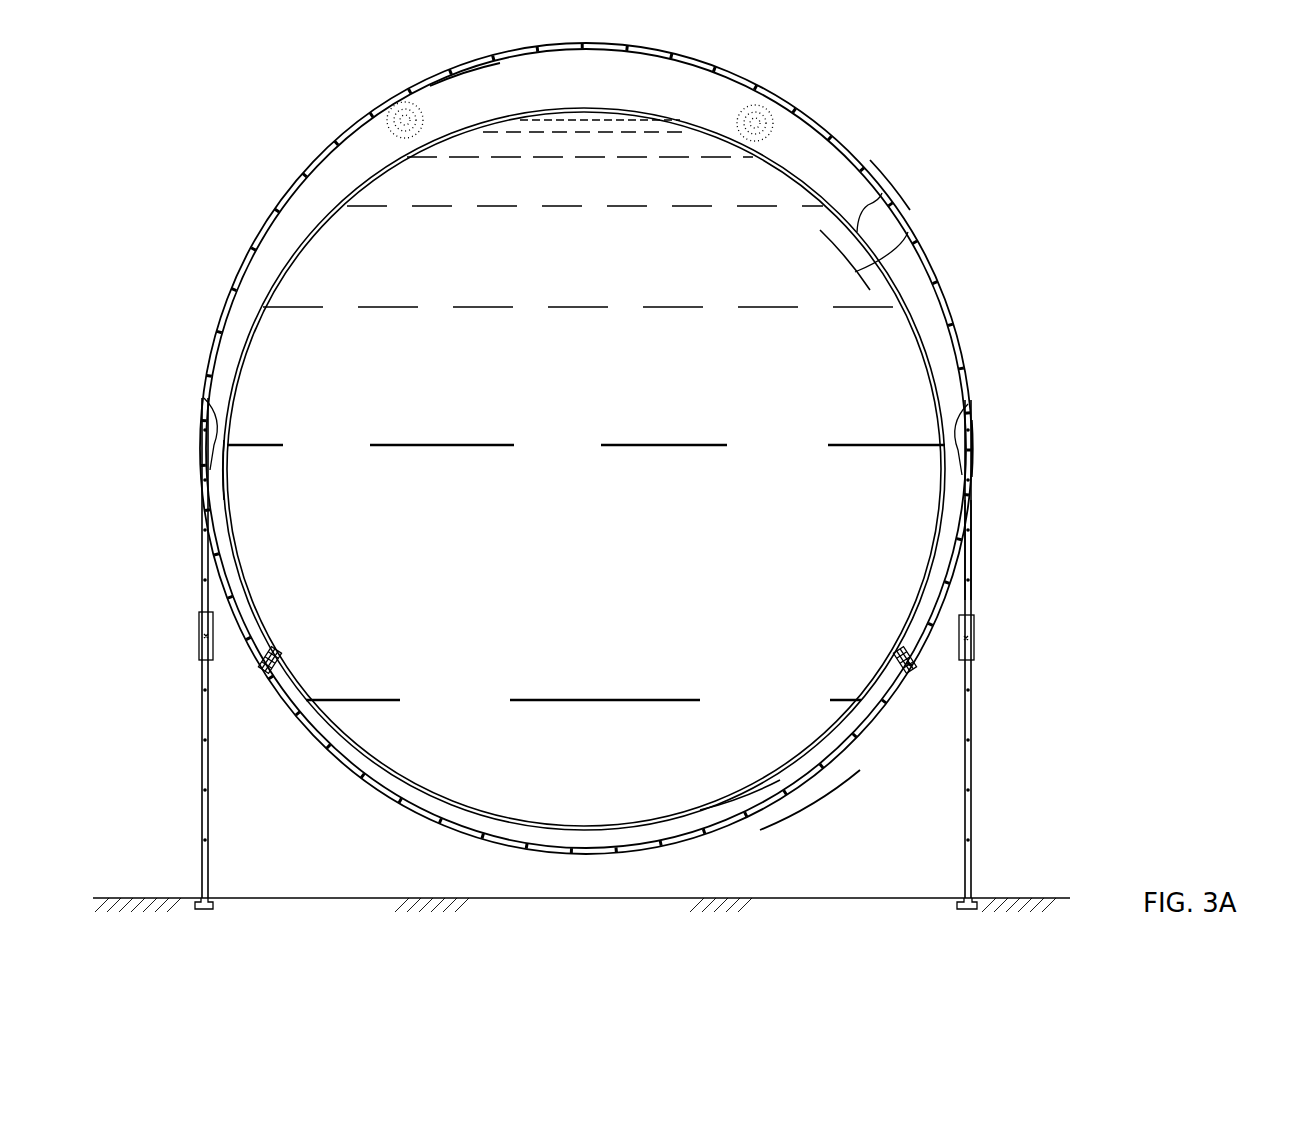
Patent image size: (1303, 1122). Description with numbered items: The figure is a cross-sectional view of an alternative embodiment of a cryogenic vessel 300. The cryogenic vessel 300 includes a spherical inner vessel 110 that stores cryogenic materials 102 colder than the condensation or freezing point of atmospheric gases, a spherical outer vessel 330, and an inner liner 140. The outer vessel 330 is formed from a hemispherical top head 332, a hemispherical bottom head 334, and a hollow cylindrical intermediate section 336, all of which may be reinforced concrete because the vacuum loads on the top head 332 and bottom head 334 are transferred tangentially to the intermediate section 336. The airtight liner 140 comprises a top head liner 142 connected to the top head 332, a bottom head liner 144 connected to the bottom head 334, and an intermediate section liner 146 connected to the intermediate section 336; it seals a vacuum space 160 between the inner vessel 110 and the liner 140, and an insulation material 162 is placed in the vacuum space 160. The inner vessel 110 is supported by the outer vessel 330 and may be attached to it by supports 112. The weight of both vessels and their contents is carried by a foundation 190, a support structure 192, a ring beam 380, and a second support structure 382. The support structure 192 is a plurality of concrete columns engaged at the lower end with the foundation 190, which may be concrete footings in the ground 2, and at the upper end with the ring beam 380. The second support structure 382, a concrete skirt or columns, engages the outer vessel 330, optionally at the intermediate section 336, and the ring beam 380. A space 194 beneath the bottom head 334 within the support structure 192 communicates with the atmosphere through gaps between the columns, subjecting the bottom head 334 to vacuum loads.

The ground 2 is at (93, 897).
The cryogenic materials 102 is at (855, 268).
The inner vessel 110 is at (812, 160).
The supports 112 is at (205, 400).
The inner liner 140 is at (903, 180).
The top head liner 142 is at (856, 233).
The bottom head liner 144 is at (740, 798).
The intermediate section liner 146 is at (216, 458).
The vacuum space 160 is at (468, 93).
The insulation material 162 is at (395, 108).
The foundation 190 is at (975, 895).
The support structure 192 is at (972, 780).
The space 194 is at (230, 815).
The cryogenic vessel 300 is at (255, 88).
The outer vessel 330 is at (798, 75).
The hemispherical top head 332 is at (733, 73).
The hemispherical bottom head 334 is at (832, 780).
The cylindrical intermediate section 336 is at (985, 443).
The ring beam 380 is at (975, 660).
The second support structure 382 is at (972, 548).